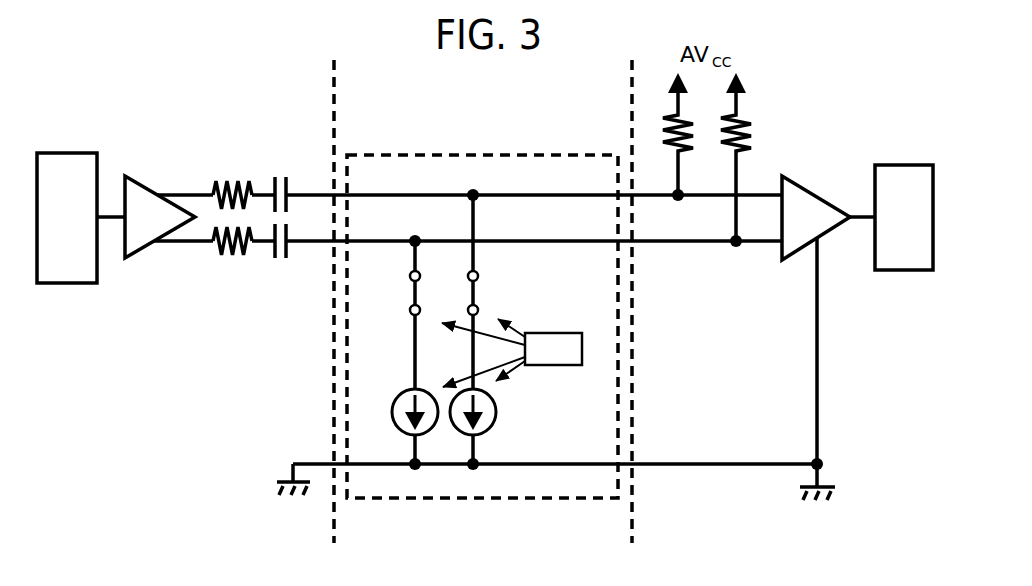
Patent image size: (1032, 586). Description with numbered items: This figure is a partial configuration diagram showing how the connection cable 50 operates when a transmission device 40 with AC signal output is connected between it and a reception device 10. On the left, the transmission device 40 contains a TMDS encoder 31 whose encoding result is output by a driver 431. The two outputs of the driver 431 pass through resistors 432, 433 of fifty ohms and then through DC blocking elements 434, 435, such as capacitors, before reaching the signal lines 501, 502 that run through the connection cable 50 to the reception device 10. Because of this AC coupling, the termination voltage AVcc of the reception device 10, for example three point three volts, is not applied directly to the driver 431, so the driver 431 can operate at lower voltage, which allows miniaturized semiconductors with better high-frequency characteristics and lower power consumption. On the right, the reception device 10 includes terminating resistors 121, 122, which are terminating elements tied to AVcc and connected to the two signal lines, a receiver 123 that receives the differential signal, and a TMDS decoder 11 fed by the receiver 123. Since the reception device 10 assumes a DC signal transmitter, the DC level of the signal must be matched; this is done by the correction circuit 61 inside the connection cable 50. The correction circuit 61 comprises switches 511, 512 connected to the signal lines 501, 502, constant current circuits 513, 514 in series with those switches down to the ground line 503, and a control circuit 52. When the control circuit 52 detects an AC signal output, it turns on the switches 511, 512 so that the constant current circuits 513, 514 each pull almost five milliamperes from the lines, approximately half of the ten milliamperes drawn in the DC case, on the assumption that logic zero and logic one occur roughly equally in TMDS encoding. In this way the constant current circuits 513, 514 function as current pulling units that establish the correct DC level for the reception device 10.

The TMDS encoder 31 is at (64, 152).
The driver 431 is at (137, 177).
The resistor 432 is at (226, 177).
The resistor 433 is at (230, 262).
The DC blocking element 434 is at (285, 177).
The DC blocking element 435 is at (285, 262).
The first signal line 501 is at (532, 197).
The second signal line 502 is at (537, 242).
The ground line 503 is at (569, 463).
The correction circuit 61 is at (457, 155).
The switch 511 is at (480, 285).
The switch 512 is at (410, 290).
The constant current circuit 513 is at (498, 410).
The constant current circuit 514 is at (393, 411).
The control circuit 52 is at (512, 353).
The terminating resistor 121 is at (660, 127).
The terminating resistor 122 is at (758, 127).
The receiver 123 is at (828, 234).
The TMDS decoder 11 is at (895, 165).
The transmission device with AC signal output 40 is at (332, 528).
The connection cable 50 is at (630, 528).
The reception device 10 is at (634, 528).